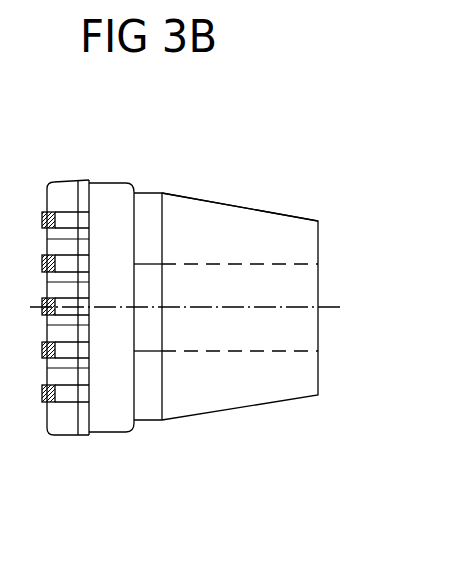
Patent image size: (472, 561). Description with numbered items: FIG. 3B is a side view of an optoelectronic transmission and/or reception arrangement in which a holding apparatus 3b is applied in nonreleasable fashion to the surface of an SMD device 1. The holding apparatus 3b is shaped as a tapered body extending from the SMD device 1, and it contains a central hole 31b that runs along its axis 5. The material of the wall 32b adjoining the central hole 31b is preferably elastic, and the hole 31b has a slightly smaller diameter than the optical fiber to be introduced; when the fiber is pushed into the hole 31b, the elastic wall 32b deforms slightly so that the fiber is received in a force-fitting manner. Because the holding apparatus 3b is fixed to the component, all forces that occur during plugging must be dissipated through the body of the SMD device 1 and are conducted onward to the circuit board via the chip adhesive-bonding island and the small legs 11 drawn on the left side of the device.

The SMD device 1 is at (110, 425).
The small legs 11 is at (48, 403).
The holding apparatus 3b is at (218, 203).
The wall 32b is at (265, 232).
The central hole 31b is at (290, 280).
The central axis 5 is at (323, 308).